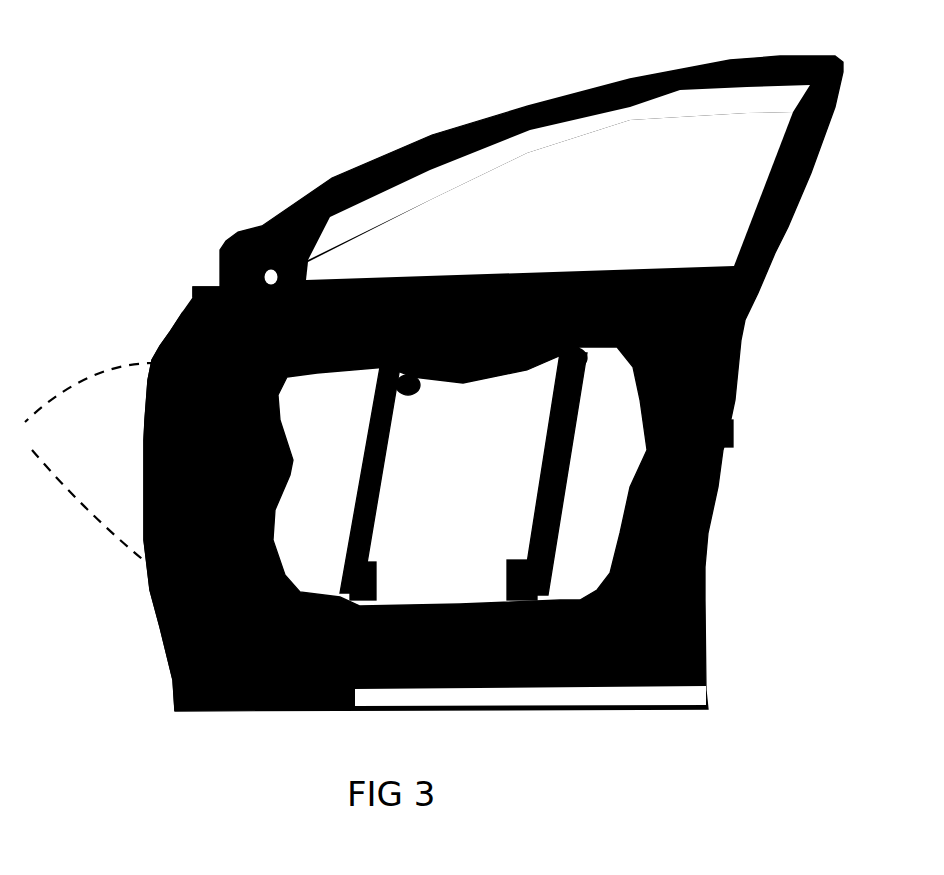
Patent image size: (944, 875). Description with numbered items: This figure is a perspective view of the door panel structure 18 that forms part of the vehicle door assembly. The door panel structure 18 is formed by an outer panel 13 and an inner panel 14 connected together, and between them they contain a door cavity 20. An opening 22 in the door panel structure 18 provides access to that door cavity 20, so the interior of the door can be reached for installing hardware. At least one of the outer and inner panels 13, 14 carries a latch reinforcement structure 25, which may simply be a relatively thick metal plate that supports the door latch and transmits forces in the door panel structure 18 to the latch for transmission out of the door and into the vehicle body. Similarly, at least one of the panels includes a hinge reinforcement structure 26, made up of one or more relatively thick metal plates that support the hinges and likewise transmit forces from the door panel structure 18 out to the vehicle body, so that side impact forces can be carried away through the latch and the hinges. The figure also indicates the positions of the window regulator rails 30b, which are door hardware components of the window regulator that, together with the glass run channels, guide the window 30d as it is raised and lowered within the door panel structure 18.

The door panel structure 18 is at (236, 74).
The window 30d is at (571, 160).
The inner panel 14 is at (195, 291).
The outer panel 13 is at (168, 333).
The hinge reinforcement structure 26 is at (82, 463).
The window regulator rails 30b is at (363, 477).
The latch reinforcement structure 25 is at (730, 437).
The opening 22 is at (497, 533).
The door cavity 20 is at (498, 463).